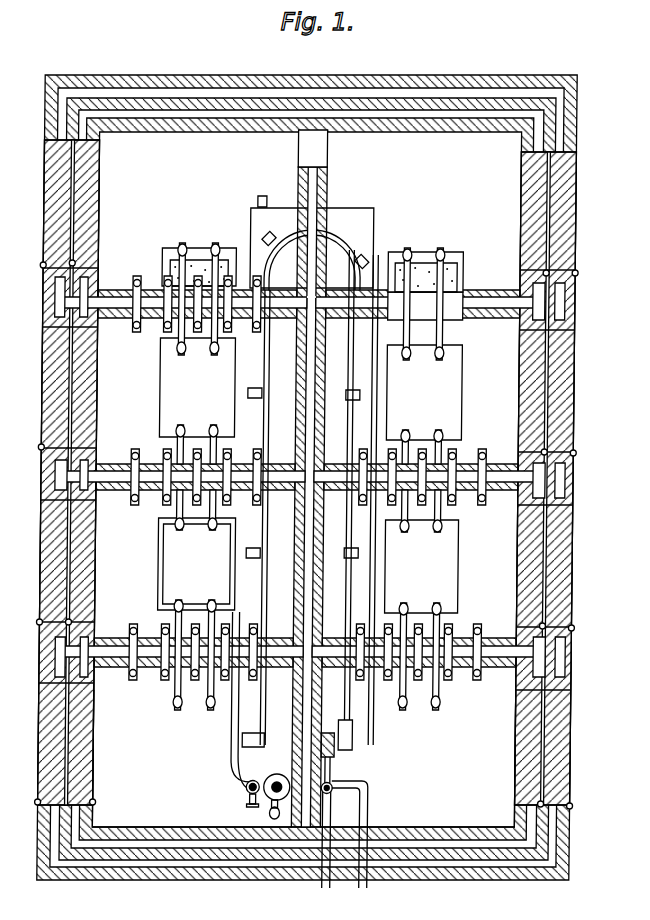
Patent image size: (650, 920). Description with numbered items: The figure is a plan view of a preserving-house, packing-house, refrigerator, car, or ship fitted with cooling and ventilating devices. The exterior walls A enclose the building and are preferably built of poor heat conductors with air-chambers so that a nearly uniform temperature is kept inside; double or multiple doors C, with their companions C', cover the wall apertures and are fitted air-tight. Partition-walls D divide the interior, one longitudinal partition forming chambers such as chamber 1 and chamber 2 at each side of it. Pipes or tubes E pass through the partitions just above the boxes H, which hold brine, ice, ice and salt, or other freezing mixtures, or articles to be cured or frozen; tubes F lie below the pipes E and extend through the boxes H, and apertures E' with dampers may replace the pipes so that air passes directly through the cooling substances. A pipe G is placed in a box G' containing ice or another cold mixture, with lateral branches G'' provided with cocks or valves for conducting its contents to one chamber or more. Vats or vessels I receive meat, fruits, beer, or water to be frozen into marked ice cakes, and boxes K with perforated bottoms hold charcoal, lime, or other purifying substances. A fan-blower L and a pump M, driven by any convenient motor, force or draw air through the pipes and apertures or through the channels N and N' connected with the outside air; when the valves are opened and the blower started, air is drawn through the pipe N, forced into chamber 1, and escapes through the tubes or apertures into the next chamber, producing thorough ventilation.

The exterior walls A is at (303, 486).
The double or multiple doors C is at (305, 472).
The column jacket C' is at (308, 472).
The partition-walls D is at (299, 497).
The pipes or tubes E is at (311, 479).
The apertures E' is at (381, 225).
The tubes or pipes F is at (309, 478).
The pipe G is at (305, 522).
The box or vessel G' is at (312, 243).
The branch pipe G'' is at (313, 487).
The boxes, vats, tanks, or vessels H is at (316, 469).
The vats or vessels I is at (310, 475).
The boxes K is at (425, 272).
The fan-blower L is at (328, 758).
The pump M is at (268, 788).
The pipe or channel N is at (325, 841).
The pipe or channel N' is at (354, 840).
The chamber 1 is at (192, 758).
The chamber 2 is at (417, 758).